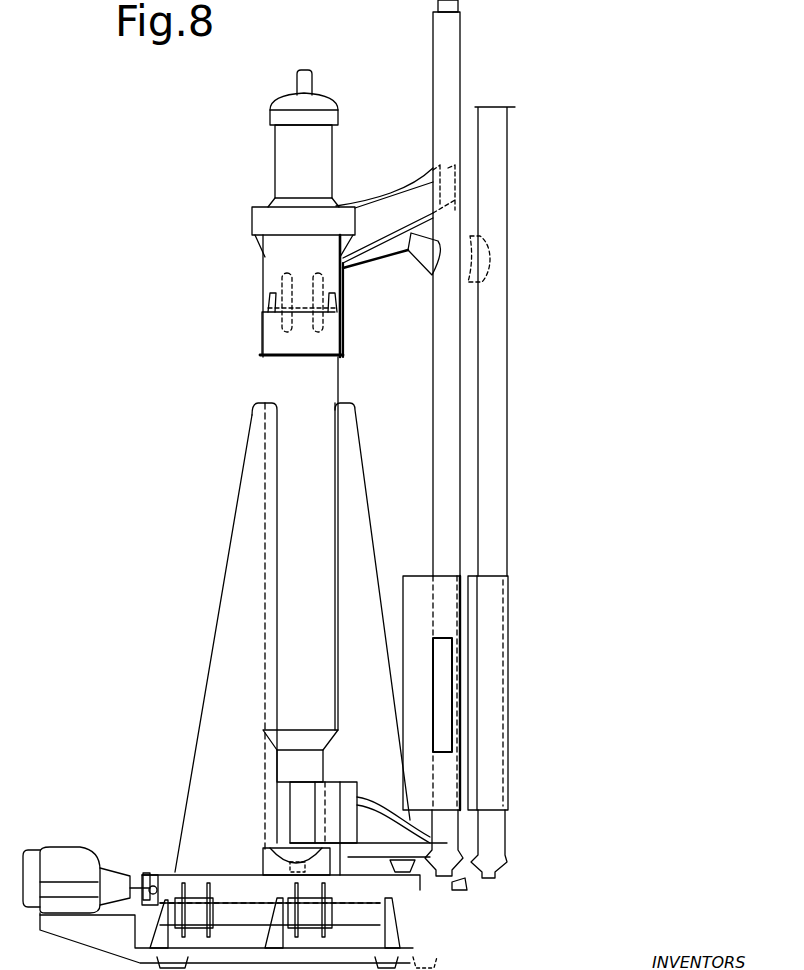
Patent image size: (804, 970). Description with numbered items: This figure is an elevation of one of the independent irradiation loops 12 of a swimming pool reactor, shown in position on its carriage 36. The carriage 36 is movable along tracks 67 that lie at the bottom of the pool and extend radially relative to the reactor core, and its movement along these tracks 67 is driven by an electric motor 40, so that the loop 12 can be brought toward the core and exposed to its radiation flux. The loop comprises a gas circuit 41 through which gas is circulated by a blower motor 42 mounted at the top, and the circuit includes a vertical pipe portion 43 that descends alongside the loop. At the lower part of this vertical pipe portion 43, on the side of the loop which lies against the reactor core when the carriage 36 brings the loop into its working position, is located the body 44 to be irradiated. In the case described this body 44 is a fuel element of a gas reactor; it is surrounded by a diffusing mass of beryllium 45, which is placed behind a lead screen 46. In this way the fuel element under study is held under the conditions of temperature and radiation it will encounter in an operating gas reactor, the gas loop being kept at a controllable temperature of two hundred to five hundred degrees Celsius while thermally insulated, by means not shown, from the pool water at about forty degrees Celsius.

The irradiation loop 12 is at (398, 364).
The carriage 36 is at (340, 903).
The electric motor 40 is at (72, 862).
The gas circuit 41 is at (318, 536).
The blower motor 42 is at (312, 170).
The vertical pipe portion 43 is at (440, 420).
The body to be irradiated 44 is at (442, 668).
The diffusing mass of beryllium 45 is at (417, 582).
The lead screen 46 is at (495, 717).
The tracks 67 is at (372, 917).